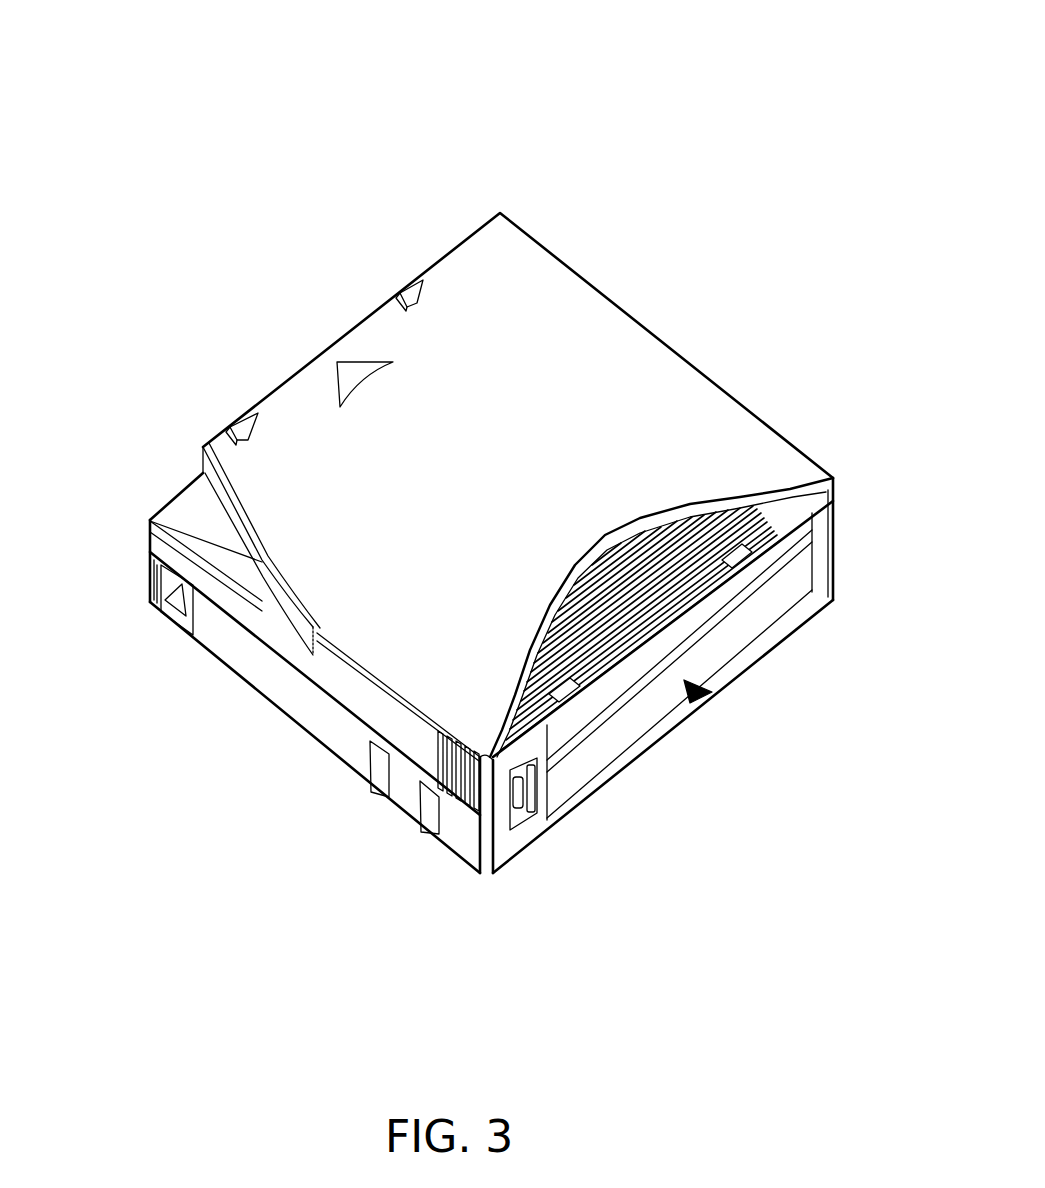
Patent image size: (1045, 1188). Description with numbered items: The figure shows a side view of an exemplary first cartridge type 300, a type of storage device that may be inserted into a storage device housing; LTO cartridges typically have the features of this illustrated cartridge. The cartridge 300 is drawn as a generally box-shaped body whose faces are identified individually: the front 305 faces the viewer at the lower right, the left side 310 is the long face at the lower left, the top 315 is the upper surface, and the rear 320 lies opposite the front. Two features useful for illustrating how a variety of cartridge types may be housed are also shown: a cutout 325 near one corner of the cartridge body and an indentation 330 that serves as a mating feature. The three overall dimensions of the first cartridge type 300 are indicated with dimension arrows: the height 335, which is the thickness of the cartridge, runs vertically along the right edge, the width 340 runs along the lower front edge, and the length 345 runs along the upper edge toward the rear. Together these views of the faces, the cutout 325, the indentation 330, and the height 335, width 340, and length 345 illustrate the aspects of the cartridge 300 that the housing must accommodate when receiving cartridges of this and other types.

The first cartridge type 300 is at (186, 168).
The front 305 is at (505, 783).
The left side 310 is at (295, 705).
The top 315 is at (359, 623).
The rear 320 is at (290, 374).
The cutout 325 is at (191, 513).
The indentation 330 is at (158, 607).
The height 335 is at (865, 483).
The width 340 is at (505, 887).
The length 345 is at (852, 465).